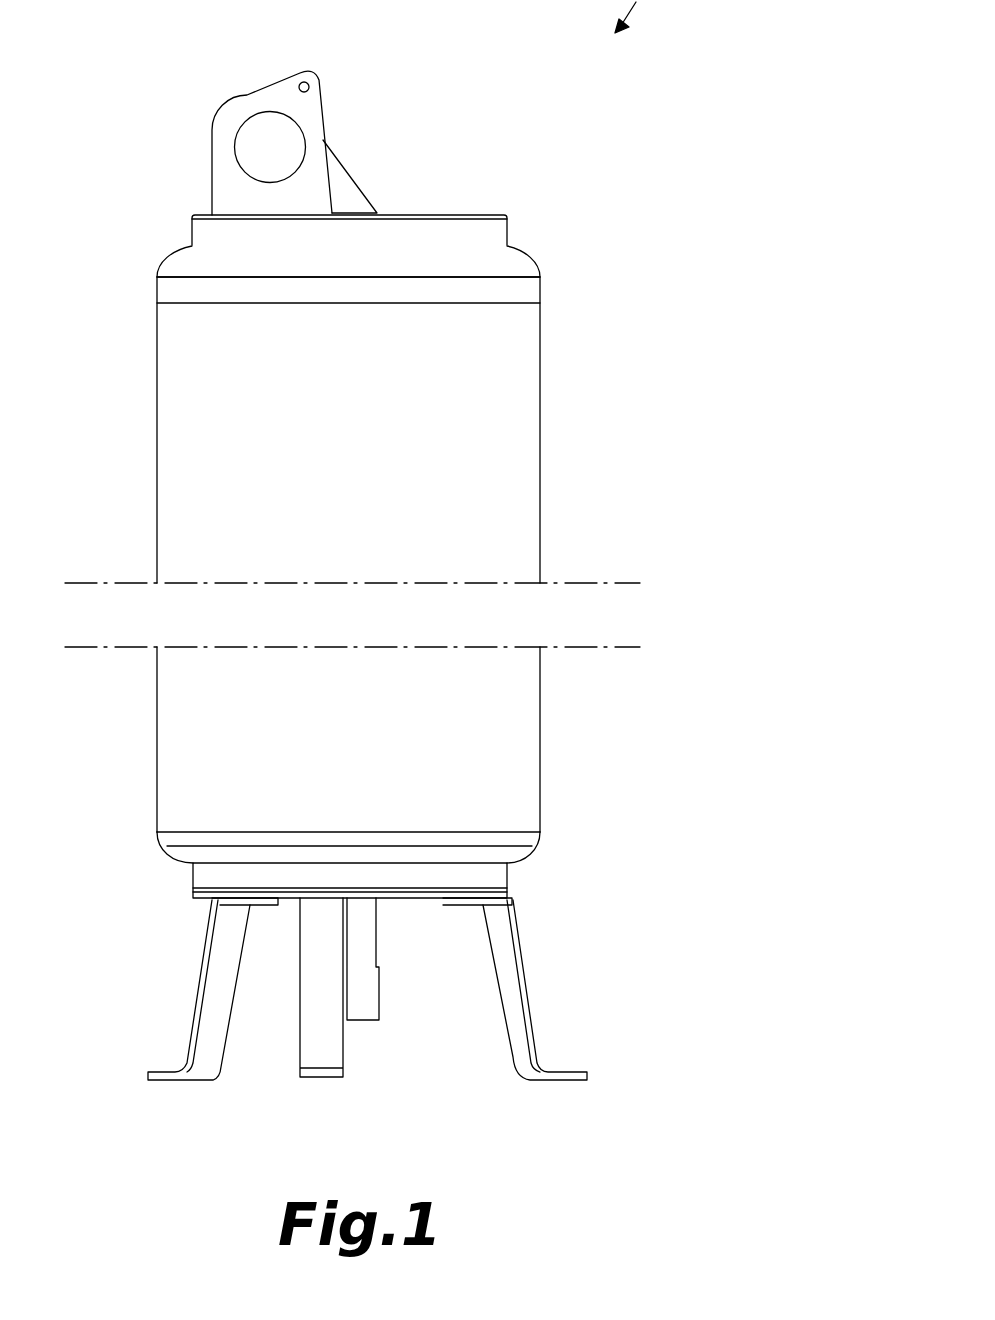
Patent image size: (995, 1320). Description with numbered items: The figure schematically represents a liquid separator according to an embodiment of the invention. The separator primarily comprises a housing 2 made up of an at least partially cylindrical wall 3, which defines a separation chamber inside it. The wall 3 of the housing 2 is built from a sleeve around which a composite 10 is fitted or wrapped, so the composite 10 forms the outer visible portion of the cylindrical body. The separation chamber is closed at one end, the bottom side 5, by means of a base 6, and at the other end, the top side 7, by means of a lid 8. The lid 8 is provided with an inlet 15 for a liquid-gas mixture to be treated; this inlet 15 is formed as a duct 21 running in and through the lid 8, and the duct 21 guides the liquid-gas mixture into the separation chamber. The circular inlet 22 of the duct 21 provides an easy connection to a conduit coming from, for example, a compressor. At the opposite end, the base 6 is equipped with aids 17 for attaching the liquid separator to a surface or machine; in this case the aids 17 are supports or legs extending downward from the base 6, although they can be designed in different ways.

The housing 2 is at (197, 364).
The wall 3 is at (197, 505).
The composite 10 is at (527, 517).
The top side 7 is at (378, 141).
The lid 8 is at (428, 212).
The inlet 15 is at (214, 126).
The circular inlet 22 is at (260, 152).
The duct 21 is at (342, 187).
The bottom side 5 is at (399, 963).
The base 6 is at (208, 874).
The aids 17 is at (210, 992).